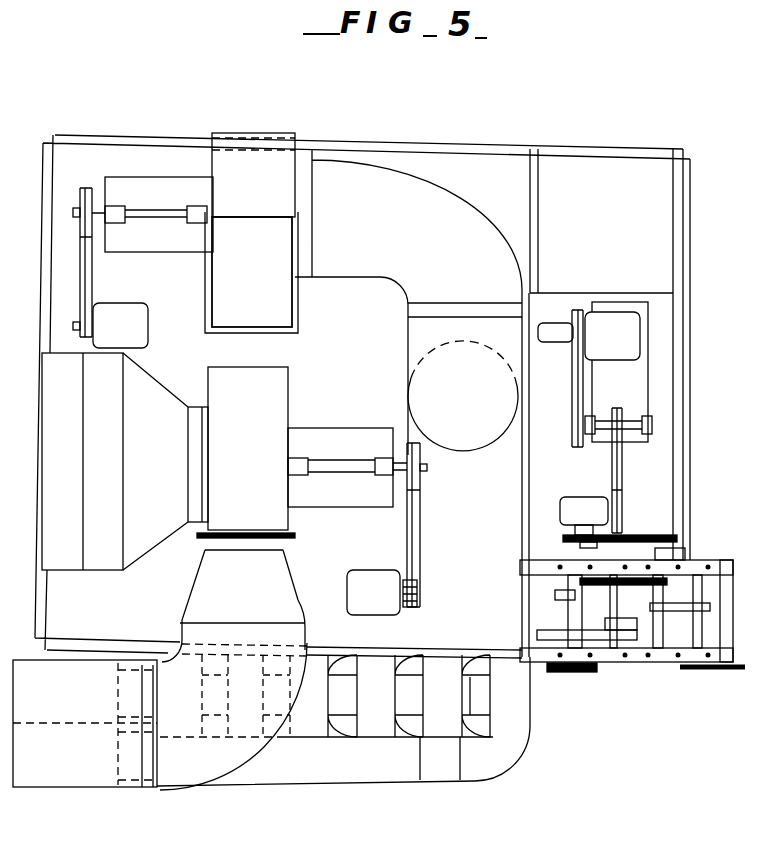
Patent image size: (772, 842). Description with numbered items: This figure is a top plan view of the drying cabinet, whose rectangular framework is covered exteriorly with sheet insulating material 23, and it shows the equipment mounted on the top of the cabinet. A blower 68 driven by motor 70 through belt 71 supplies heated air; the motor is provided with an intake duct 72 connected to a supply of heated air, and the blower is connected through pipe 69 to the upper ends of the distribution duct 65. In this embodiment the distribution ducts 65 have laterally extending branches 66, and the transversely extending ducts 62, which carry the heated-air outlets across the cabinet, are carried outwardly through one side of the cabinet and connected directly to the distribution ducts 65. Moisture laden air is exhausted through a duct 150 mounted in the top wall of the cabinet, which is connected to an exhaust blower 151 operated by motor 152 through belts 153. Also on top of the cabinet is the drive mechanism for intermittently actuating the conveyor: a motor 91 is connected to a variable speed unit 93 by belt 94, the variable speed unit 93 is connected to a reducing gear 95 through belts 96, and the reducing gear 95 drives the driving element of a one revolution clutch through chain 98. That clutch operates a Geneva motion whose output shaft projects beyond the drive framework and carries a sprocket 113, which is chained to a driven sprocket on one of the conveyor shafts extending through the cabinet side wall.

The sheet insulating material 23 is at (55, 158).
The exhaust blower 151 is at (315, 212).
The belts 153 is at (92, 272).
The motor 152 is at (120, 325).
The intake duct 72 is at (125, 461).
The blower 68 is at (233, 552).
The belt 71 is at (413, 525).
The motor 70 is at (373, 592).
The duct 150 is at (463, 396).
The motor 91 is at (616, 372).
The belt 94 is at (578, 388).
The variable speed unit 93 is at (602, 420).
The belts 96 is at (622, 477).
The reducing gear 95 is at (584, 516).
The chain 98 is at (628, 535).
The sprocket 113 is at (587, 668).
The pipe 69 is at (230, 753).
The distribution duct 65 is at (85, 723).
The branches 66 is at (343, 721).
The ducts 62 is at (392, 696).